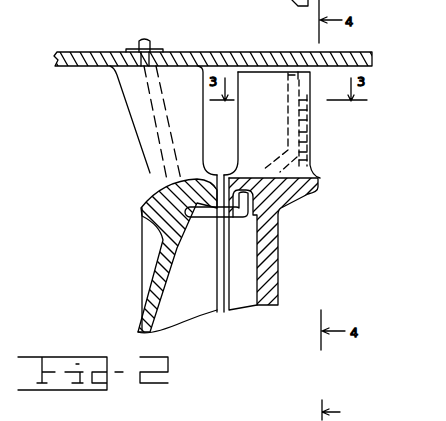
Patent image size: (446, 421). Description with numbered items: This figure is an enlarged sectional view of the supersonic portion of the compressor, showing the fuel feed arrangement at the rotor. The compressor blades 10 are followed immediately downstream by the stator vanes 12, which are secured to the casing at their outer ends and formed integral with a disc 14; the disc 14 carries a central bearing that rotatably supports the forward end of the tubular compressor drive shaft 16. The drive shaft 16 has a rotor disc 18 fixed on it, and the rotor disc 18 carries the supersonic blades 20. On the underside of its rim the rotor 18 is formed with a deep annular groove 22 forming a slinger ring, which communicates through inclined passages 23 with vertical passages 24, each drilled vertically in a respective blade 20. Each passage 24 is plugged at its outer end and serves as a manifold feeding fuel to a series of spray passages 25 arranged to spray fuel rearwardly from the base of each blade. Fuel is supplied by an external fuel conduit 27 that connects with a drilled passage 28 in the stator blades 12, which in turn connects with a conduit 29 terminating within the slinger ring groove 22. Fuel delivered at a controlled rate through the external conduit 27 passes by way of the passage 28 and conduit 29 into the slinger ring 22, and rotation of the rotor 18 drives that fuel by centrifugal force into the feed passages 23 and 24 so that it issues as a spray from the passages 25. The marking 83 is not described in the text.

The compressor blades 10 is at (338, 409).
The stator vanes 12 is at (133, 117).
The disc 14 is at (165, 254).
The tubular compressor drive shaft 16 is at (184, 53).
The rotor disc 18 is at (279, 222).
The supersonic blades 20 is at (268, 133).
The annular groove (slinger ring) 22 is at (240, 192).
The inclined passages 23 is at (279, 163).
The vertical passages 24 is at (286, 91).
The spray passages 25 is at (311, 144).
The external fuel conduit 27 is at (139, 46).
The drilled passage 28 is at (137, 141).
The conduit 29 is at (245, 220).
The sheet fragment 83 is at (341, 415).